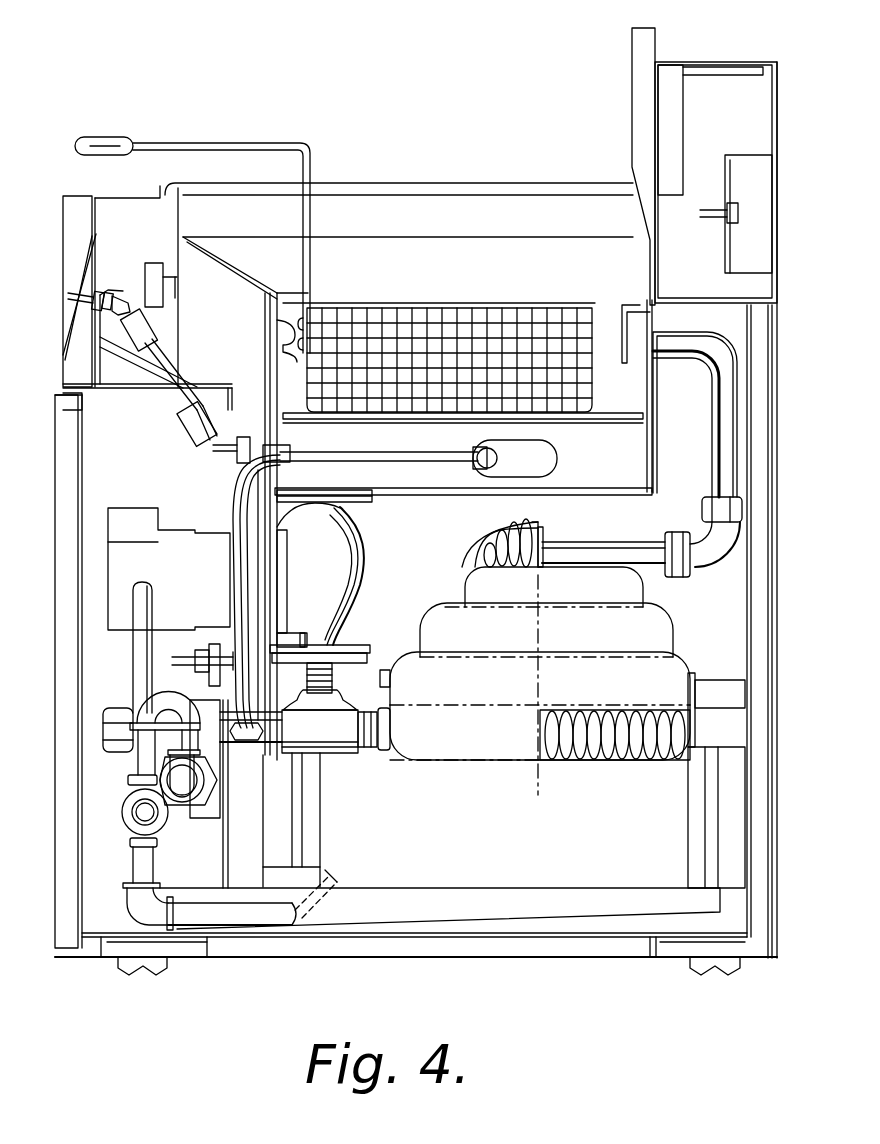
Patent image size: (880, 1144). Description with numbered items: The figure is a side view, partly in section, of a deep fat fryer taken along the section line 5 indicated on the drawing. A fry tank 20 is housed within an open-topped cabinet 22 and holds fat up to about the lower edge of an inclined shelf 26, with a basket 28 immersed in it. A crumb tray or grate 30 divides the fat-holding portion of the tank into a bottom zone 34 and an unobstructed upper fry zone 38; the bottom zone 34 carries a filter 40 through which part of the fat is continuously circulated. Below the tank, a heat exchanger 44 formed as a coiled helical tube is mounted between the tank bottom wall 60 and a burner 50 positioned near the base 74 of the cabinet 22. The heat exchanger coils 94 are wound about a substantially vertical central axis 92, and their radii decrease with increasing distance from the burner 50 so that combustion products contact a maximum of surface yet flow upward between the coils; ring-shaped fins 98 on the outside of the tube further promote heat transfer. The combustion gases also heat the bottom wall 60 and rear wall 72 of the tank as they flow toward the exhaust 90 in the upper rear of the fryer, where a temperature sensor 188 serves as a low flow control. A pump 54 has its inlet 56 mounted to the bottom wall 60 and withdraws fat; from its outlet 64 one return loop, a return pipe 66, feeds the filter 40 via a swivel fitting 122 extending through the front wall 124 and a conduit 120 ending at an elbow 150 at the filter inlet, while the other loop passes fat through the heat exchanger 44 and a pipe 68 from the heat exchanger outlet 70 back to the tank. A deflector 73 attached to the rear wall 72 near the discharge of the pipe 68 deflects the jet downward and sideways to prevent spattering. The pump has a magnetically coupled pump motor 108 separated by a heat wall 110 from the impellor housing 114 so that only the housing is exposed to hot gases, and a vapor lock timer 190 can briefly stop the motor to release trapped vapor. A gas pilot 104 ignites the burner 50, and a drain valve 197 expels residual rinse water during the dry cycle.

The section line 5- 5 is at (277, 262).
The fry tank 20 is at (486, 185).
The cabinet 22 is at (62, 212).
The inclined shelf 26 is at (222, 258).
The basket 28 is at (494, 305).
The crumb tray or grate 30 is at (626, 416).
The bottom zone 34 is at (636, 470).
The fry zone 38 is at (620, 340).
The filter 40 is at (556, 447).
The heat exchanger 44 is at (668, 603).
The burner 50 is at (507, 888).
The pump 54 is at (375, 536).
The pump inlet 56 is at (355, 500).
The bottom wall 60 is at (640, 492).
The pump outlet 64 is at (335, 663).
The return pipe 66 is at (238, 545).
The pipe 68 is at (712, 418).
The heat exchanger outlet 70 is at (545, 545).
The rear wall 72 is at (678, 385).
The deflector 73 is at (622, 312).
The base 74 is at (575, 960).
The exhaust 90 is at (722, 56).
The central axis 92 is at (536, 790).
The heat exchanger coils 94 is at (430, 612).
The ring-shaped fins 98 is at (495, 557).
The gas pilot 104 is at (330, 875).
The pump motor 108 is at (182, 533).
The heat wall 110 is at (255, 495).
The impellor housing 114 is at (366, 568).
The conduit 120 is at (335, 460).
The swivel fitting 122 is at (316, 440).
The front wall 124 is at (282, 357).
The elbow 150 is at (498, 460).
The temperature sensor 188 is at (710, 222).
The vapor lock timer 190 is at (146, 268).
The drain valve 197 is at (103, 730).